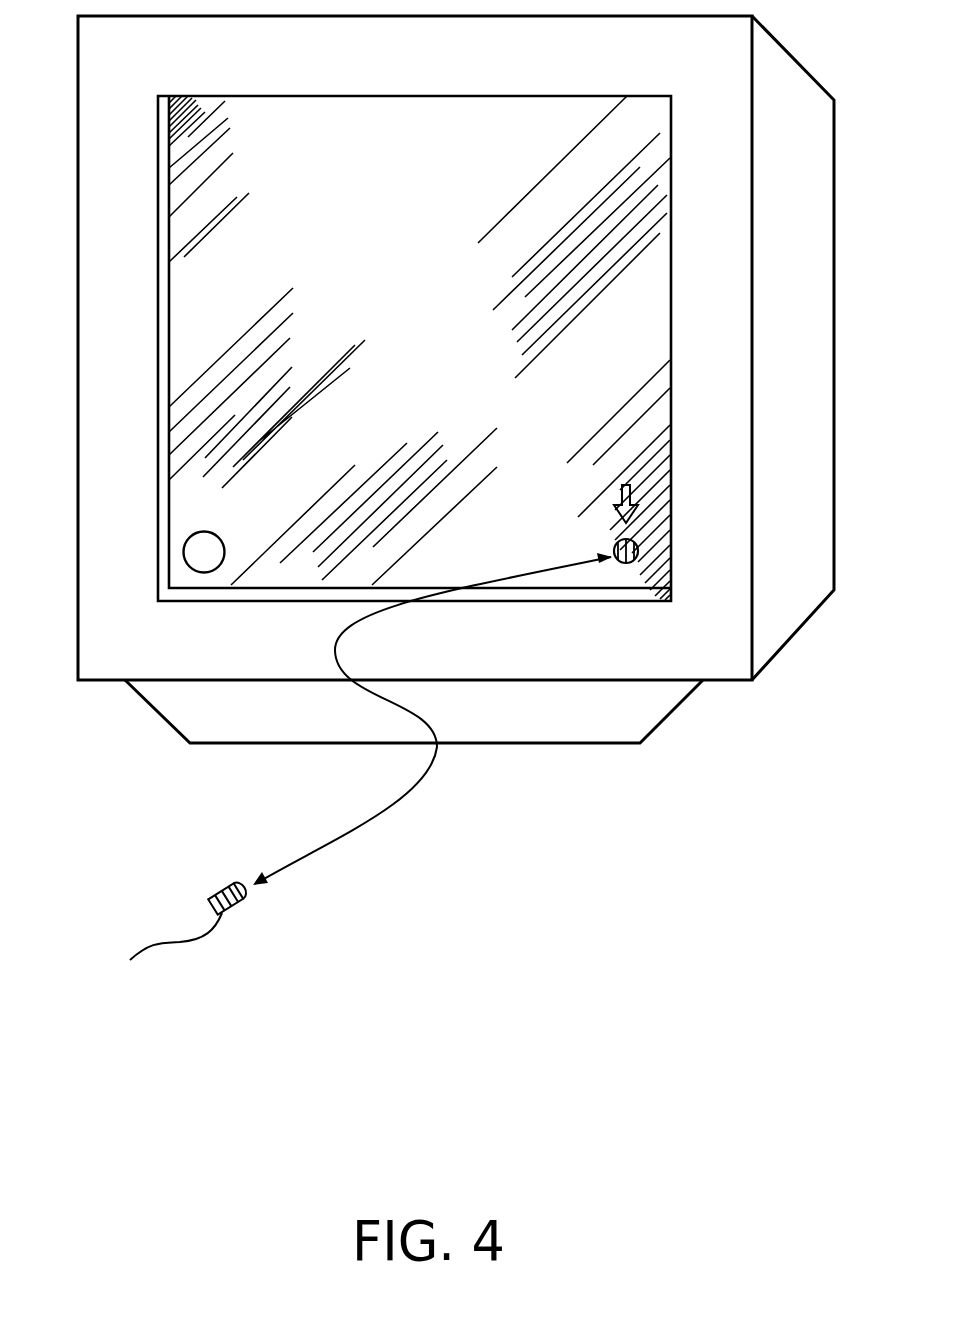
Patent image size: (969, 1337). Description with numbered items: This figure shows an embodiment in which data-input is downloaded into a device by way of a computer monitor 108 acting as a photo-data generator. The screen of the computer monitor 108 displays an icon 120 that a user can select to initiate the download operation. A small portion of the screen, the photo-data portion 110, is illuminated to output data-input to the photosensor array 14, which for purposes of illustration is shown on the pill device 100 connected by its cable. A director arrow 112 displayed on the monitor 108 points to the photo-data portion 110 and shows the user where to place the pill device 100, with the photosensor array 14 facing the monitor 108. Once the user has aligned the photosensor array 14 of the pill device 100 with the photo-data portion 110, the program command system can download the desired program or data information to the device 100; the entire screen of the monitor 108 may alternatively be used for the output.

The photosensor array 14 is at (258, 893).
The pill device 100 is at (157, 962).
The computer monitor 108 is at (432, 389).
The photo-data portion 110 is at (626, 564).
The director arrow 112 is at (630, 486).
The icon 120 is at (189, 567).